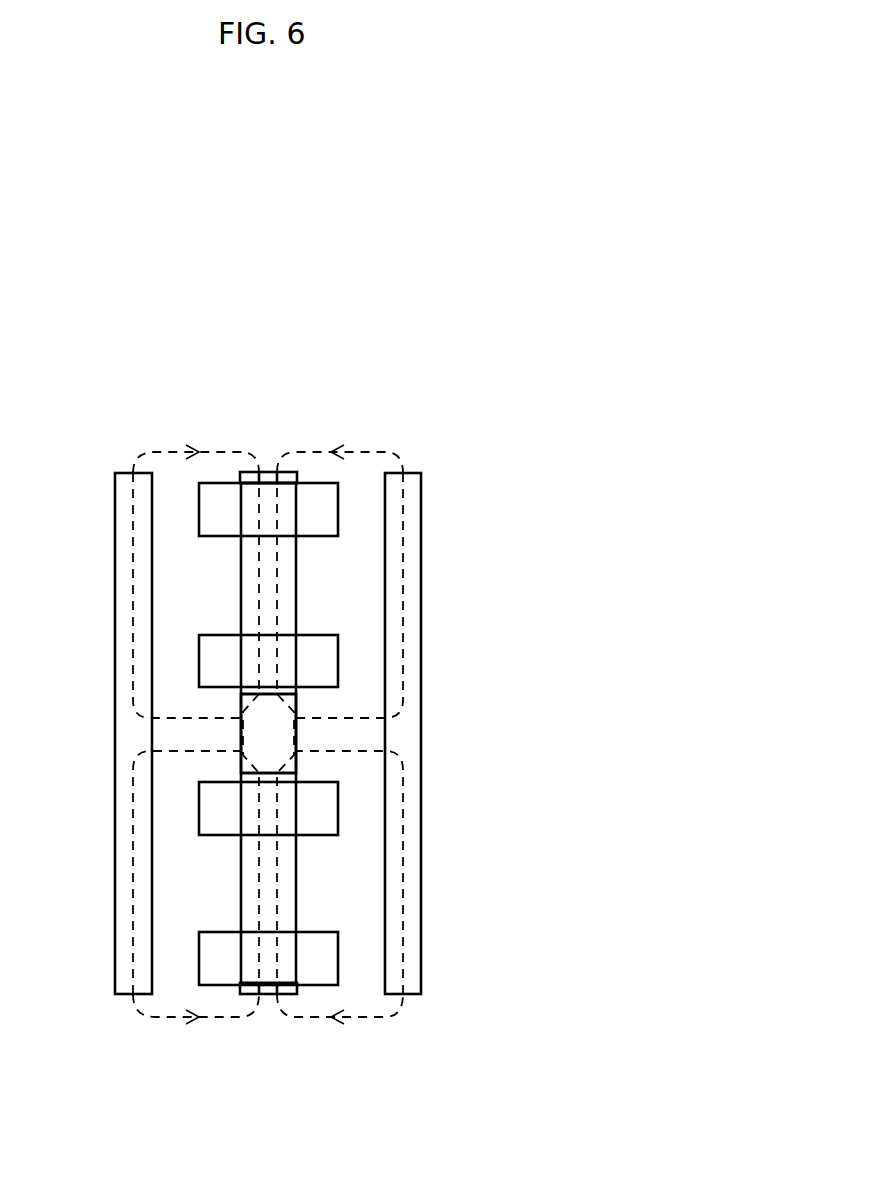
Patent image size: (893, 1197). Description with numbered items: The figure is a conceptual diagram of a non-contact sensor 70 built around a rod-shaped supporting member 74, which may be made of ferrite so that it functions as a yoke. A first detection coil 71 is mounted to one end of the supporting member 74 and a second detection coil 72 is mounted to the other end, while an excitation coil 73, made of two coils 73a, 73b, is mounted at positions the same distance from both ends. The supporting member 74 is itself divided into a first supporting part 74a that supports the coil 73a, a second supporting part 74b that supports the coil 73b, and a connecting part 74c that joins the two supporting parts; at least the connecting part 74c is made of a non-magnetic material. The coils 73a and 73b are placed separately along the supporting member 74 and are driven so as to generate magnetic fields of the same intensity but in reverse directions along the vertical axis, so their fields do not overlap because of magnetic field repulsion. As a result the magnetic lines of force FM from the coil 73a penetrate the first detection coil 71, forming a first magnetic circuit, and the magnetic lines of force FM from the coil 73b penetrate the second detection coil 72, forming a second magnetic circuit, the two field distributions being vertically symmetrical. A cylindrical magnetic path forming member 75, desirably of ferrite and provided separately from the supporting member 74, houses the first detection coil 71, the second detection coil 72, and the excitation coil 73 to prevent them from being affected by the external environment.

The non-contact sensor 70 is at (547, 374).
The first detection coil 71 is at (338, 508).
The second detection coil 72 is at (338, 955).
The excitation coil 73 is at (387, 735).
The coil 73a is at (338, 664).
The coil 73b is at (338, 805).
The supporting member 74 is at (260, 736).
The first supporting part 74a is at (266, 471).
The second supporting part 74b is at (267, 995).
The connecting part 74c is at (242, 736).
The magnetic path forming member 75 is at (113, 980).
The magnetic lines of force FM is at (407, 573).